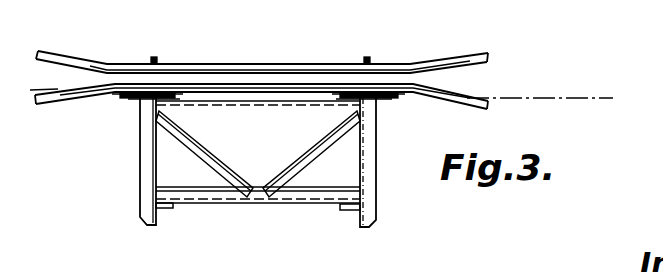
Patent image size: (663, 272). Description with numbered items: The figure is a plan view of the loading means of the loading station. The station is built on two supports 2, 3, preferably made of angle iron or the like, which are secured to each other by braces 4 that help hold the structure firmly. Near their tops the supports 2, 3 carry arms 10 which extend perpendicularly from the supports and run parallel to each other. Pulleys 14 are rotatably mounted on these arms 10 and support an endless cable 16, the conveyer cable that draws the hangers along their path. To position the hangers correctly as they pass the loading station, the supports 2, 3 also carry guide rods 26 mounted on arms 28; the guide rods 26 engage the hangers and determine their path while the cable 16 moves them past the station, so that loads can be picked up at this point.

The guide rods 26 is at (58, 94).
The arms 28 is at (155, 58).
The pulleys 14 is at (128, 99).
The arms 10 is at (143, 173).
The braces 4 is at (265, 106).
The support 2 is at (162, 214).
The support 3 is at (357, 220).
The endless cable 16 is at (565, 98).